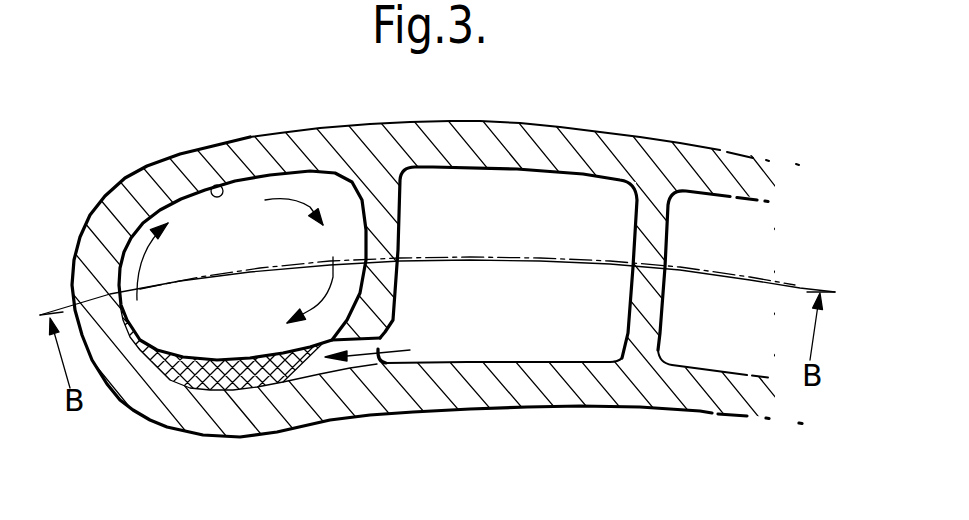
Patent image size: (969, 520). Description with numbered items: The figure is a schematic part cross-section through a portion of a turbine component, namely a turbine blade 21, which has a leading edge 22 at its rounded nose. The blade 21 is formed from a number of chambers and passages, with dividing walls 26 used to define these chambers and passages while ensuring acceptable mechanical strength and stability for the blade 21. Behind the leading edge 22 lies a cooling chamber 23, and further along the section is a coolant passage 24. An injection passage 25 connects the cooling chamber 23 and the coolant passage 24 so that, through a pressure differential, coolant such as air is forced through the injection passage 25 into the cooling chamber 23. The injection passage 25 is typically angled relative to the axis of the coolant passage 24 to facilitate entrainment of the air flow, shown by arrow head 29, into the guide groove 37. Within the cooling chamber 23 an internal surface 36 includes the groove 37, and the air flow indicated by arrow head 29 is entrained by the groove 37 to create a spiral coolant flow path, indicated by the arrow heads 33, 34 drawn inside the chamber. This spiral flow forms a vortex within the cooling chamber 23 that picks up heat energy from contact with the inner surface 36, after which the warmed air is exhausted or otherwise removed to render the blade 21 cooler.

The turbine blade 21 is at (133, 168).
The leading edge 22 is at (100, 205).
The cooling chamber 23 is at (208, 238).
The coolant passage 24 is at (513, 207).
The injection passage 25 is at (357, 358).
The dividing walls 26 is at (698, 395).
The arrow head (air flow) 29 is at (392, 343).
The arrow head (spiral coolant flow path) 33 is at (133, 263).
The arrow head (spiral coolant flow path) 34 is at (285, 198).
The internal surface 36 is at (230, 182).
The groove 37 is at (197, 370).